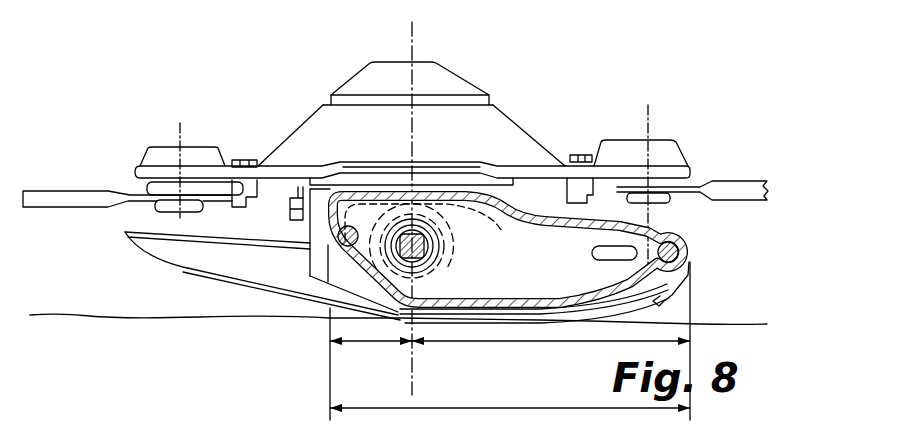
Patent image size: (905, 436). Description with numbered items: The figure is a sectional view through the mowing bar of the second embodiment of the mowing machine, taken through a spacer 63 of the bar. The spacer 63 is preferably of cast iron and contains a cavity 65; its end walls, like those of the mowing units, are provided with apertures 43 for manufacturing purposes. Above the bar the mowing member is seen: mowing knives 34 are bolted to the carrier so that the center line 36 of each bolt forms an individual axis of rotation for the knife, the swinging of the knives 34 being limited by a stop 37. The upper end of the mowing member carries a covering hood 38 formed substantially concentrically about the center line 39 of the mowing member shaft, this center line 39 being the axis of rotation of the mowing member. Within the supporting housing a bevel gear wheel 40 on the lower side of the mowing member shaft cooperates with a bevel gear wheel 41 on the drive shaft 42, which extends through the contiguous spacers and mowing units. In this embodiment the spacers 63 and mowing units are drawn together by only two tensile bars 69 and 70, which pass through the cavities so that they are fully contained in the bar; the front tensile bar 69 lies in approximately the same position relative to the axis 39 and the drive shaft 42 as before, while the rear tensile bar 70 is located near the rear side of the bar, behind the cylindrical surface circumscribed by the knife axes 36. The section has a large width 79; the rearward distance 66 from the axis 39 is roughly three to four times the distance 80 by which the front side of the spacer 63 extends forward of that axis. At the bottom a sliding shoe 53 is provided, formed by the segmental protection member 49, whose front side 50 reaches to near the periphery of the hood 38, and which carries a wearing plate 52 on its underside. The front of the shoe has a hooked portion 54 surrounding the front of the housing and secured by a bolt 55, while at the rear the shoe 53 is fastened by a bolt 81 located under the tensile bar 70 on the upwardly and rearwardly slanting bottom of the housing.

The mowing knives 34 is at (44, 209).
The center line of bolt 36 is at (180, 131).
The stop 37 is at (238, 204).
The covering hood 38 is at (507, 117).
The center line of mowing member shaft 39 is at (412, 51).
The bevel gear wheel 40 is at (503, 232).
The bevel gear wheel 41 is at (445, 276).
The drive shaft 42 is at (424, 247).
The apertures 43 is at (607, 261).
The segmental protection member 49 is at (150, 232).
The front side of protection member 50 is at (125, 234).
The wearing plate 52 is at (213, 280).
The sliding shoe 53 is at (137, 288).
The hooked portion 54 is at (296, 189).
The bolt 55 is at (290, 207).
The spacer 63 is at (495, 305).
The cavity 65 is at (538, 287).
The distance 66 is at (556, 338).
The tensile bar 69 is at (342, 240).
The tensile bar 70 is at (678, 250).
The width 79 is at (565, 407).
The distance 80 is at (386, 343).
The bolt 81 is at (676, 301).